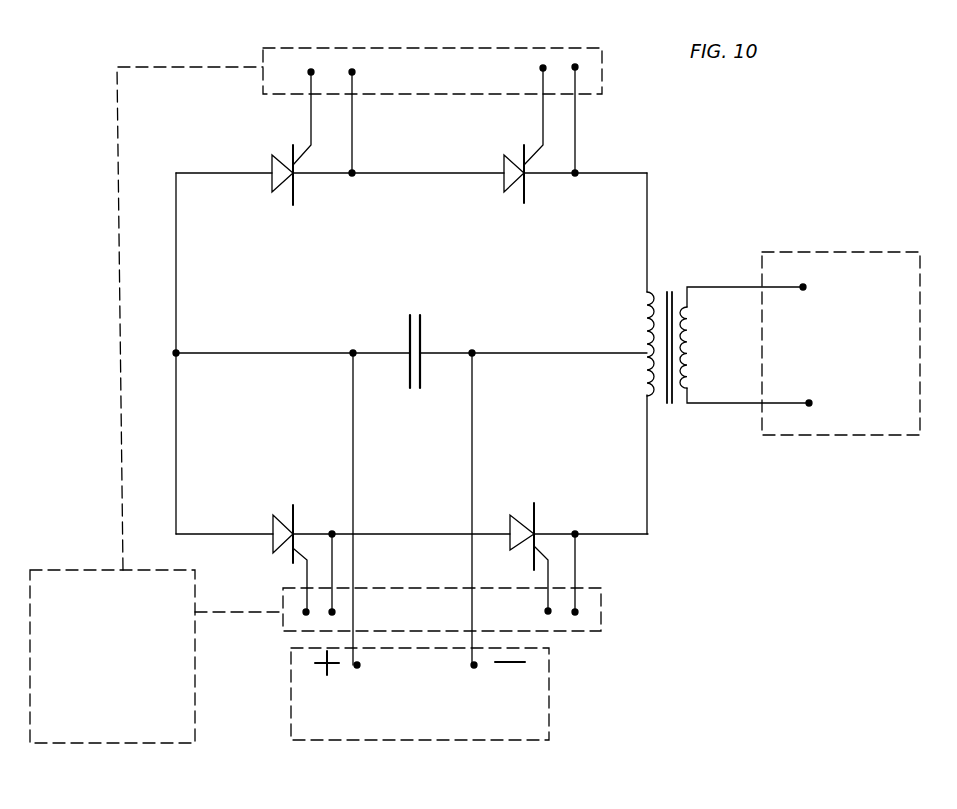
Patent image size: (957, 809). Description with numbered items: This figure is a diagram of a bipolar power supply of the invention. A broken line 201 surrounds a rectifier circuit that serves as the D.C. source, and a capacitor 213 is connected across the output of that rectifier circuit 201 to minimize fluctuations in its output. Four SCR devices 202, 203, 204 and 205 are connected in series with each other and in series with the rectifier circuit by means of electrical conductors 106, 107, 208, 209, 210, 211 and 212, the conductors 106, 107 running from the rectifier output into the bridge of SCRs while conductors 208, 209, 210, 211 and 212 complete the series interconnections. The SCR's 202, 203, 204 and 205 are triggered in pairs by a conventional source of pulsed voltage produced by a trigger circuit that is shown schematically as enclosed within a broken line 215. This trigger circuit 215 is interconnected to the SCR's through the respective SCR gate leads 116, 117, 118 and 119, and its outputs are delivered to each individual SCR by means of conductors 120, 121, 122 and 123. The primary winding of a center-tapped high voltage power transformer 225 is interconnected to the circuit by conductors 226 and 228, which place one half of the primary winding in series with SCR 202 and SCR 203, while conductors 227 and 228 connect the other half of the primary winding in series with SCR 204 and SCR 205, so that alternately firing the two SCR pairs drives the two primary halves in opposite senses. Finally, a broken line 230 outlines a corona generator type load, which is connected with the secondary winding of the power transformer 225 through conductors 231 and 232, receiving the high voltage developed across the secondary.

The electrical conductor 106 is at (353, 410).
The electrical conductor 107 is at (473, 397).
The SCR gate lead 116 is at (311, 113).
The SCR gate lead 117 is at (543, 115).
The SCR gate lead 118 is at (306, 567).
The SCR gate lead 119 is at (547, 578).
The conductor 120 is at (353, 125).
The conductor 121 is at (575, 108).
The conductor 122 is at (333, 577).
The conductor 123 is at (577, 572).
The rectifier circuit 201 is at (530, 718).
The SCR device 202 is at (277, 178).
The SCR device 203 is at (508, 174).
The SCR device 204 is at (275, 528).
The SCR device 205 is at (522, 515).
The electrical conductor 208 is at (265, 353).
The electrical conductor 209 is at (177, 260).
The electrical conductor 210 is at (387, 174).
The electrical conductor 211 is at (180, 440).
The electrical conductor 212 is at (392, 532).
The capacitor 213 is at (420, 330).
The trigger circuit 215 is at (123, 705).
The center-tapped high voltage power transformer 225 is at (667, 283).
The conductor 226 is at (648, 212).
The conductor 227 is at (650, 507).
The conductor 228 is at (557, 333).
The corona generator type load 230 is at (823, 253).
The conductor 231 is at (725, 287).
The conductor 232 is at (717, 404).